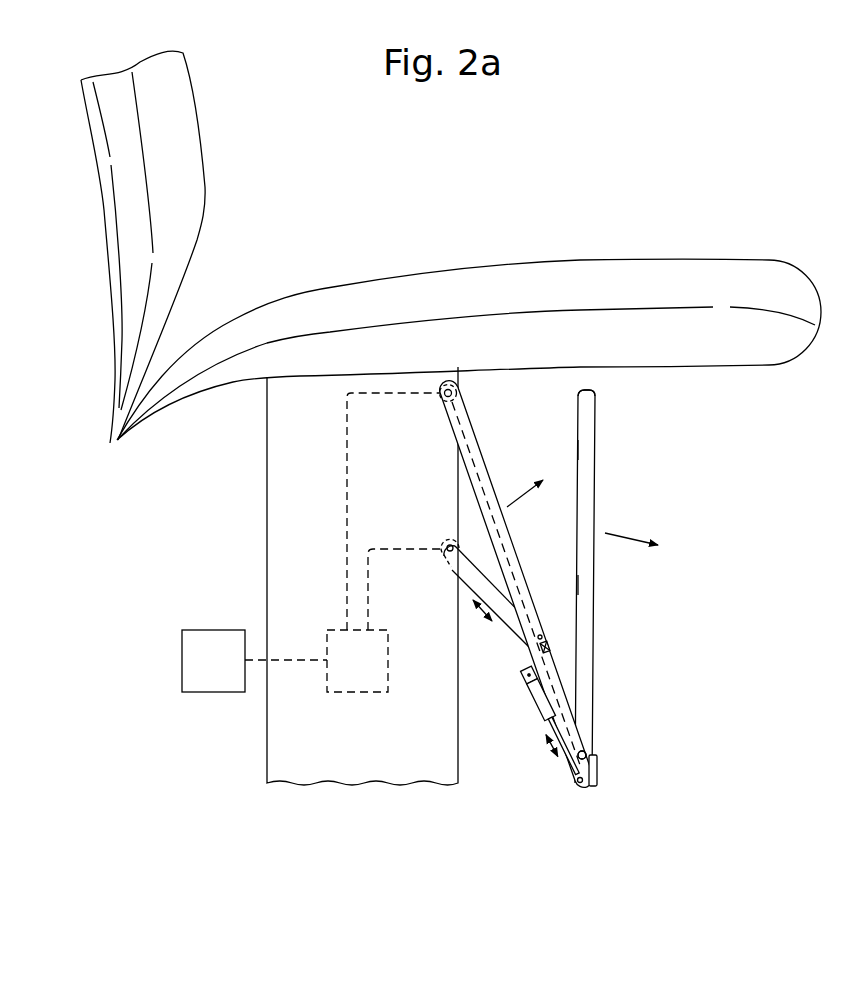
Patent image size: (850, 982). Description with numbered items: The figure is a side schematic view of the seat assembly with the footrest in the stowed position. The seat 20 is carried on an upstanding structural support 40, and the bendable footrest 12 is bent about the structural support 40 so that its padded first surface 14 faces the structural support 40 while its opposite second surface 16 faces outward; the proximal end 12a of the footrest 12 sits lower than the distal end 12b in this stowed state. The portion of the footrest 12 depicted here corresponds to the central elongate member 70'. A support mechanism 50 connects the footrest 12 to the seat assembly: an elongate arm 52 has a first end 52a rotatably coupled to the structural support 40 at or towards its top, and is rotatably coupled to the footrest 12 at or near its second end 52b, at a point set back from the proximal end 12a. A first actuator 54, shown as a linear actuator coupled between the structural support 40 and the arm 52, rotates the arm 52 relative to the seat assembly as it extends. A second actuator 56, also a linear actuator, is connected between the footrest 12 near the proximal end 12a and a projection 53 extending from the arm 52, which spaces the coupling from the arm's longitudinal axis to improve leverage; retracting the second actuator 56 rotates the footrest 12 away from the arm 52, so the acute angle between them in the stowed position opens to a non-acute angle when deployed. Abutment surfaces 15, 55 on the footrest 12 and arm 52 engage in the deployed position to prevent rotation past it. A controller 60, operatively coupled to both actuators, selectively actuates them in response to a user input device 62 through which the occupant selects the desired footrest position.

The seat 20 is at (332, 307).
The structural support 40 is at (293, 747).
The controller 60 is at (348, 648).
The user input device 62 is at (203, 667).
The footrest 12 is at (586, 498).
The proximal end 12a is at (577, 783).
The distal end 12b is at (589, 395).
The central elongate member 70' is at (626, 449).
The second surface 16 is at (594, 587).
The first surface 14 is at (576, 460).
The abutment surface 15 is at (598, 775).
The support mechanism 50 is at (494, 409).
The arm 52 is at (480, 483).
The first end 52a is at (447, 384).
The second end 52b is at (566, 712).
The projection 53 is at (530, 667).
The first actuator 54 is at (498, 602).
The abutment surface 55 is at (572, 755).
The second actuator 56 is at (540, 702).